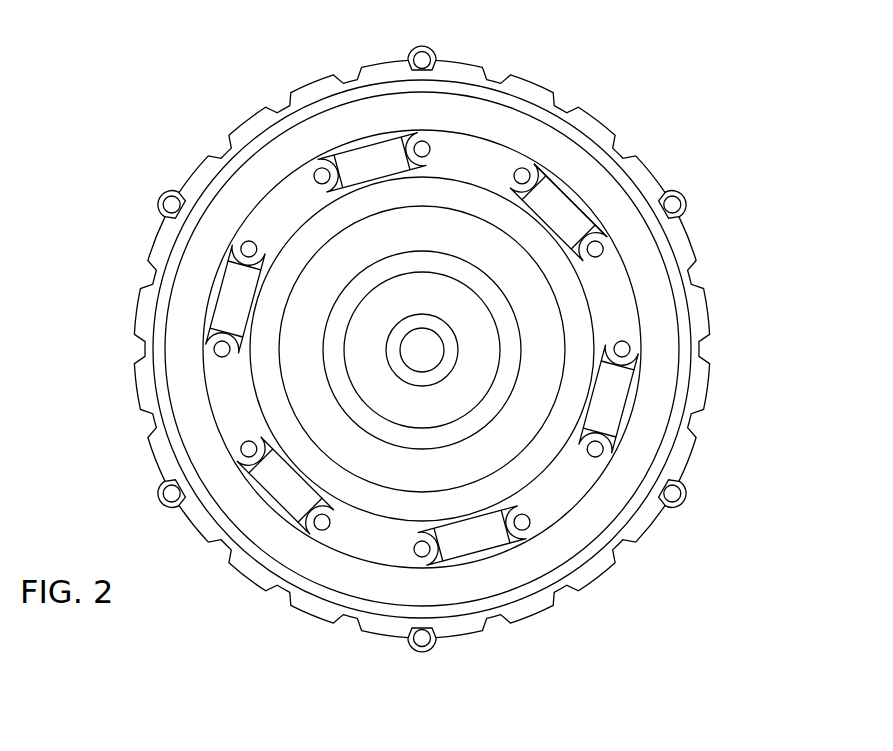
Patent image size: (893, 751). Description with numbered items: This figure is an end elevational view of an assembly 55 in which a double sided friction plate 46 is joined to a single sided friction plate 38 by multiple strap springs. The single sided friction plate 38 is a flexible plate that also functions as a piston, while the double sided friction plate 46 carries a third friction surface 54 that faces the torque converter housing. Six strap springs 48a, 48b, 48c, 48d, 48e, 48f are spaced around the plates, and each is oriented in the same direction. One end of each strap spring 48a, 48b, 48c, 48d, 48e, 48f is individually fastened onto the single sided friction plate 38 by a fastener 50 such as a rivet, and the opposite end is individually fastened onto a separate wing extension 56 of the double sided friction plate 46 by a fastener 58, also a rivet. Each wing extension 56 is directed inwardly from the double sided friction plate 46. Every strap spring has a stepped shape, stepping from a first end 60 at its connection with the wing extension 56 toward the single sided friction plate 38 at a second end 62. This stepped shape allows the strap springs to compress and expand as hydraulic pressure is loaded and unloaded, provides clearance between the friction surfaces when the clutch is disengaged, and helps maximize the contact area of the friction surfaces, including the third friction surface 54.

The assembly 55 is at (660, 54).
The single sided friction plate 38 is at (516, 82).
The double sided friction plate 46 is at (641, 311).
The fastener 50 is at (641, 284).
The third friction surface 54 is at (622, 197).
The wing extension 56 is at (524, 170).
The fastener 58 is at (547, 182).
The first end 60 is at (562, 215).
The second end 62 is at (606, 247).
The strap spring 48a is at (633, 160).
The strap spring 48b is at (603, 405).
The strap spring 48c is at (488, 540).
The strap spring 48d is at (290, 493).
The strap spring 48e is at (240, 287).
The strap spring 48f is at (357, 160).